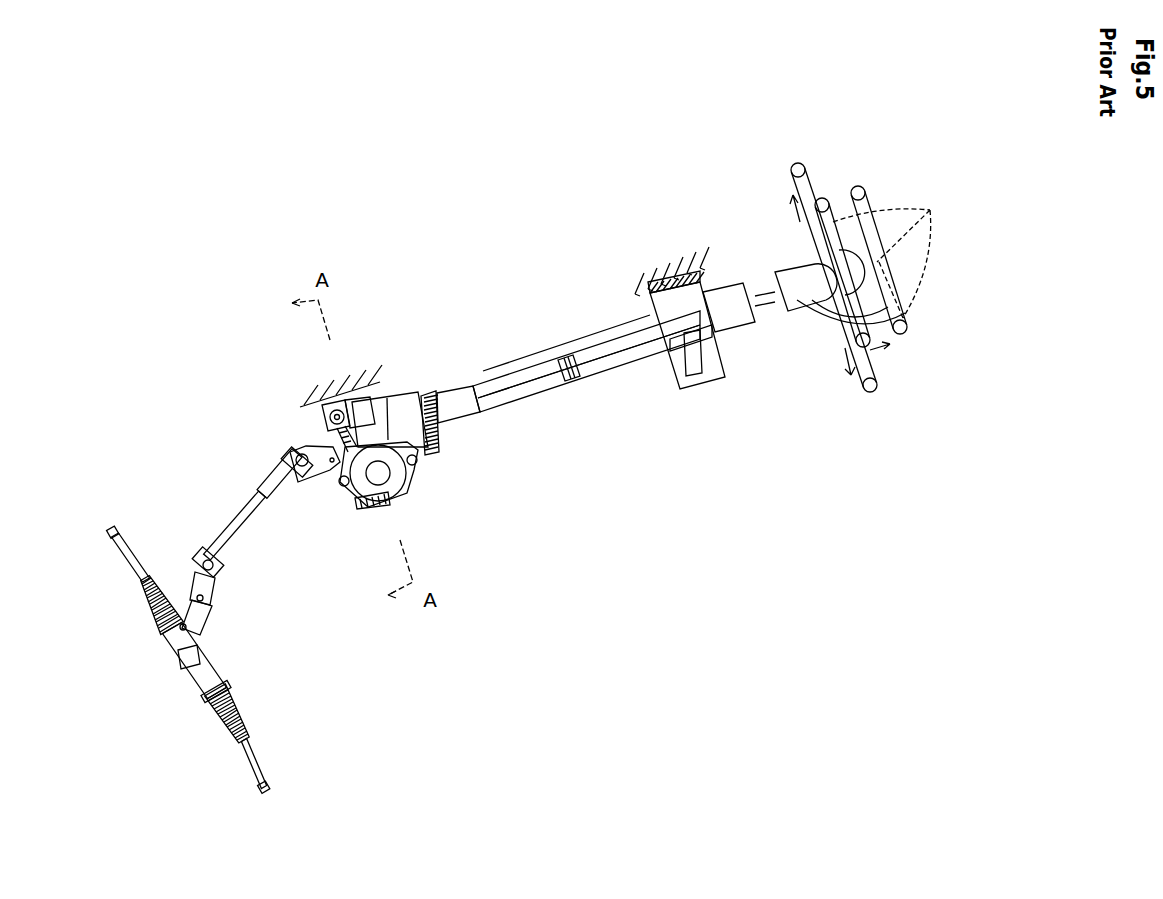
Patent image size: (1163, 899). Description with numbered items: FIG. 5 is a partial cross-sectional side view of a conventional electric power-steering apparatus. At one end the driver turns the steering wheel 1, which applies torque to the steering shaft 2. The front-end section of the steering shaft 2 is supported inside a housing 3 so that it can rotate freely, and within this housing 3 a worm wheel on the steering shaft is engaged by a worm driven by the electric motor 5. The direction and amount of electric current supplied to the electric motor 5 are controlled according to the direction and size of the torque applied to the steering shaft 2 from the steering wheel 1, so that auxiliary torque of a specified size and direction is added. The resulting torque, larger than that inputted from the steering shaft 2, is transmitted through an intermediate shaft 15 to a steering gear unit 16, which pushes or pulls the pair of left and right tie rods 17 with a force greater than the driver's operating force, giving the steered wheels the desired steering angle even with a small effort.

The steering wheel 1 is at (900, 225).
The steering shaft 2 is at (512, 383).
The housing 3 is at (423, 432).
The electric motor 5 is at (360, 492).
The intermediate shaft 15 is at (270, 497).
The steering gear unit 16 is at (190, 675).
The tie rods 17 is at (133, 557).